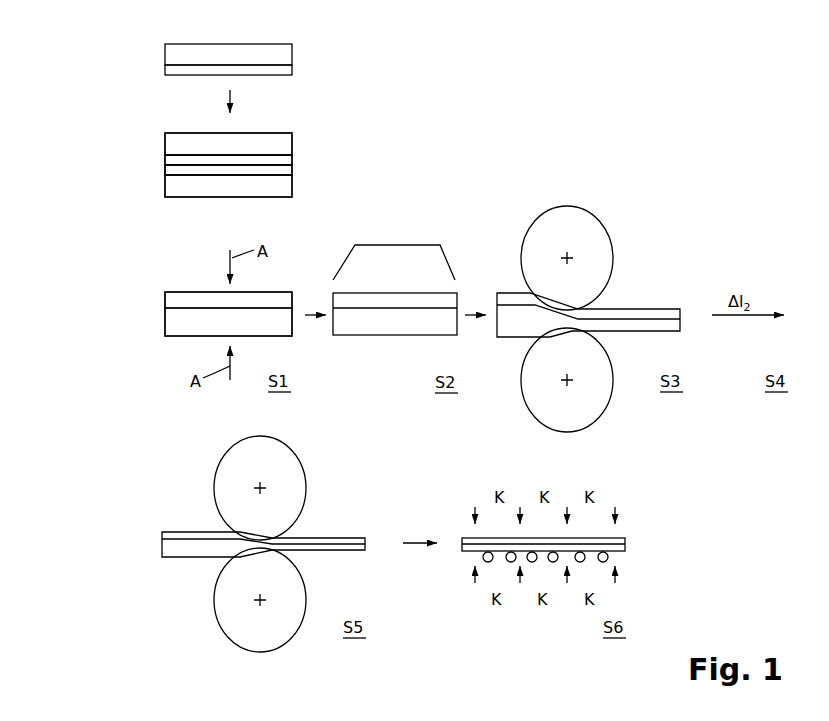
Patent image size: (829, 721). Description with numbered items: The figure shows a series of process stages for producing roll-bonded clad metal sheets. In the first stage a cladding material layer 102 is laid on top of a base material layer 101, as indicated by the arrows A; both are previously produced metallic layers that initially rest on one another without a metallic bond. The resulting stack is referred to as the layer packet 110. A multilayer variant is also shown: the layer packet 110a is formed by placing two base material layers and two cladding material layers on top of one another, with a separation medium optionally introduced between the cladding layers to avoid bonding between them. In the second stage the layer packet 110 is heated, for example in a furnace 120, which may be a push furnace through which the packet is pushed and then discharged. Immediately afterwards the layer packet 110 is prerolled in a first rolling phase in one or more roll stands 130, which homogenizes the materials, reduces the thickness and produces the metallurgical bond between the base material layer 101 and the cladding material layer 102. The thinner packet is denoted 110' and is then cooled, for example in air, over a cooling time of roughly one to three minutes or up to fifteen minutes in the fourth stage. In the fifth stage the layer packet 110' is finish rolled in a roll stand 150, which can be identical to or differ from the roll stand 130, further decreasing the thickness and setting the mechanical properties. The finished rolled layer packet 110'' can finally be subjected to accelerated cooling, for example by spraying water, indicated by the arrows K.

The layer packet 110a is at (92, 123).
The layer packet 110 is at (171, 314).
The base material layer 101 is at (175, 326).
The cladding material layer 102 is at (165, 300).
The furnace 120 is at (390, 245).
The roll stand 130 is at (577, 225).
The layer packet having a reduced thickness 110' is at (616, 296).
The roll stand 150 is at (285, 462).
The finished rolled layer packet 110'' is at (393, 521).